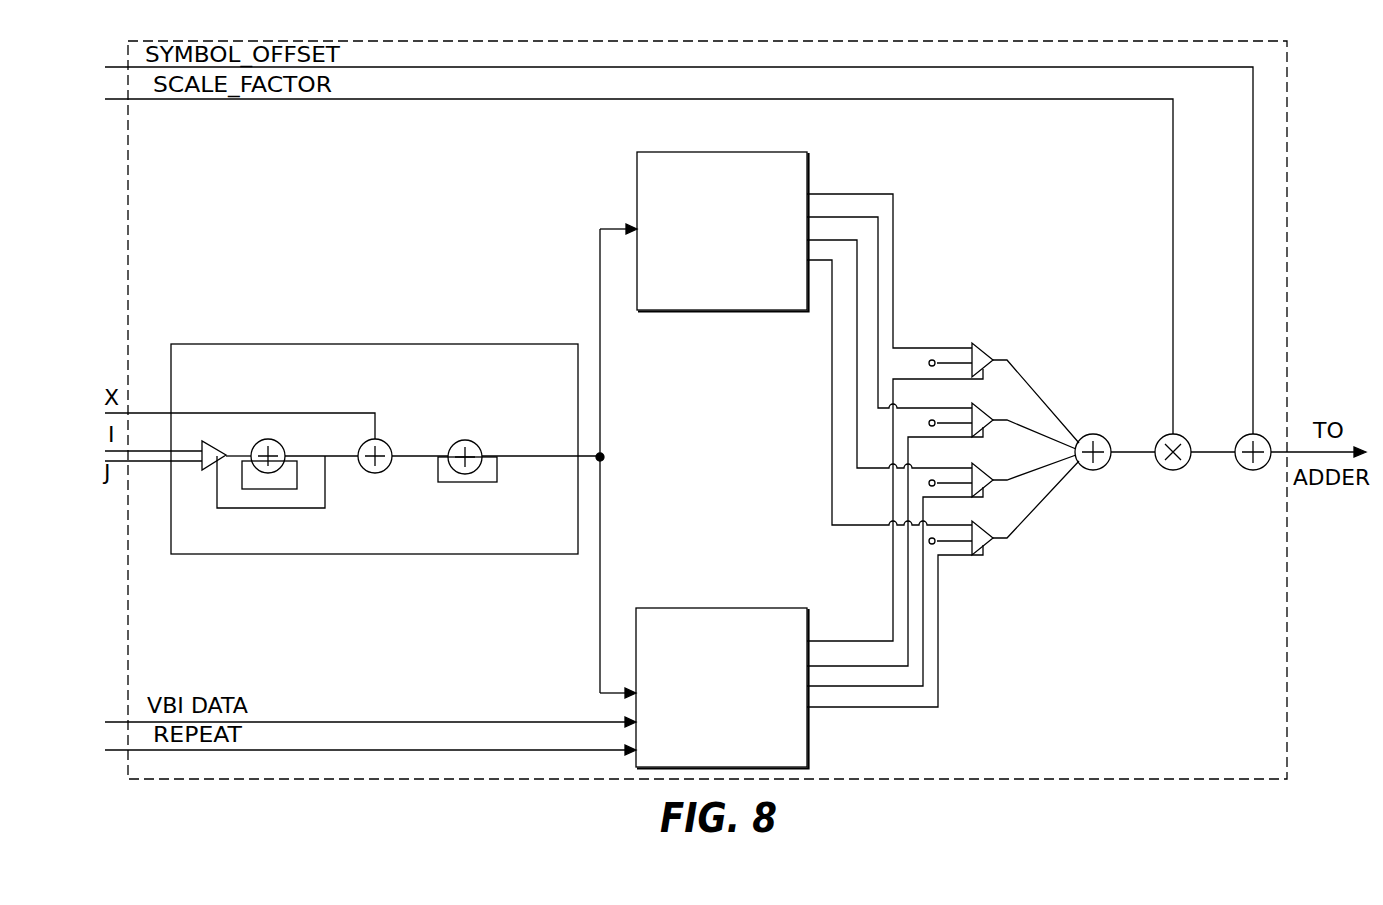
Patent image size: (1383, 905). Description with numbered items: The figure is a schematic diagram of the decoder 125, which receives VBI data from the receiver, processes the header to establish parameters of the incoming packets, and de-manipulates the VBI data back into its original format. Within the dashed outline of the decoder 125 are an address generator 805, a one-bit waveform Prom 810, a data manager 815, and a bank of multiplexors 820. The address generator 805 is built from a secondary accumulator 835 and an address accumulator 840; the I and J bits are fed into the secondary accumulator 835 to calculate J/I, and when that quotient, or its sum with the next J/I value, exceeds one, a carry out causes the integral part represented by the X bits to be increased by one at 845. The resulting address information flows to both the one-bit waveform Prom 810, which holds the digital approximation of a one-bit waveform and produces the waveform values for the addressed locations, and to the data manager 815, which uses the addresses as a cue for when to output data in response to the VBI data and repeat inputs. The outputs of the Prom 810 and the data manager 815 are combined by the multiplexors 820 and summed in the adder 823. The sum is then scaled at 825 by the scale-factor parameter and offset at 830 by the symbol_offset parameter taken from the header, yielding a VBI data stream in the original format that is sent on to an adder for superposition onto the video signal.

The decoder 125 is at (797, 41).
The address generator 805 is at (385, 432).
The one-bit waveform Prom 810 is at (744, 152).
The data manager 815 is at (727, 608).
The multiplexors 820 is at (987, 338).
The adder 823 is at (1106, 436).
The scaler 825 is at (1178, 469).
The offset adder 830 is at (1258, 469).
The secondary accumulator 835 is at (294, 437).
The address accumulator 840 is at (478, 444).
The integral-part incrementer 845 is at (387, 469).